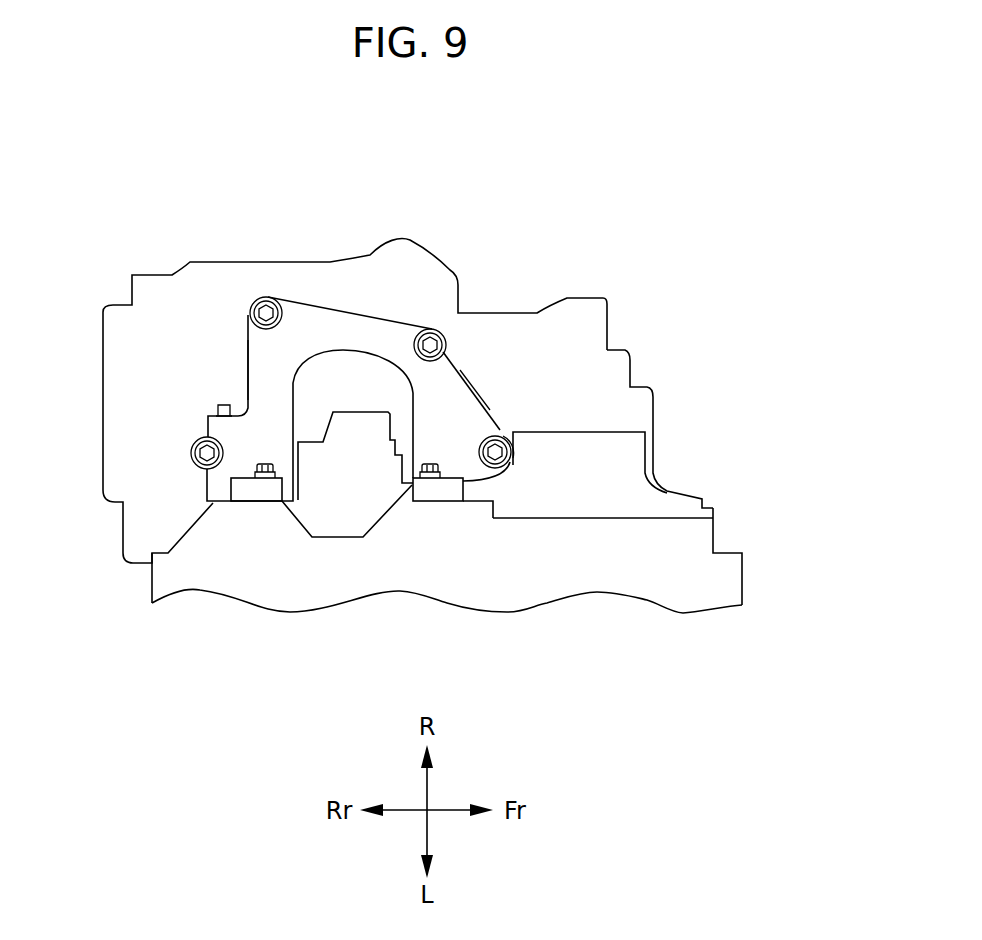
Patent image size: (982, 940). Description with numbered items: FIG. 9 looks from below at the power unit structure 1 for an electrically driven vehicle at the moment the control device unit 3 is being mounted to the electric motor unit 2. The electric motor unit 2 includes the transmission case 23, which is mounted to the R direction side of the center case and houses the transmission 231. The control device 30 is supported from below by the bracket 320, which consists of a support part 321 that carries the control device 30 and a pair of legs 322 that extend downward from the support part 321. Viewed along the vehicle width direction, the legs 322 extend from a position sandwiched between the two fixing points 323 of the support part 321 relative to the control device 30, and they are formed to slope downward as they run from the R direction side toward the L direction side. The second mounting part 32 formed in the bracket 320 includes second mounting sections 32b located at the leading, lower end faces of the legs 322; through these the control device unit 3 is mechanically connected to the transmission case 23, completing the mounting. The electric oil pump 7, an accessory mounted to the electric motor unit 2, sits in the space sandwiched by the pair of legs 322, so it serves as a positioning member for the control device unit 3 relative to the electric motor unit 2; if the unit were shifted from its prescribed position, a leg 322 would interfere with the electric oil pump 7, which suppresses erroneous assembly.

The power unit structure 1 is at (762, 210).
The electric motor unit 2 is at (797, 572).
The control device unit 3 is at (565, 270).
The electric oil pump 7 is at (357, 433).
The transmission case 23 is at (647, 573).
The control device 30 is at (557, 347).
The transmission 231 is at (612, 512).
The bracket 320 is at (392, 308).
The support part 321 is at (372, 320).
The leg 322 is at (247, 370).
The fixing point 323 is at (266, 296).
The second mounting part 32 is at (346, 537).
The second mounting section 32b is at (243, 503).